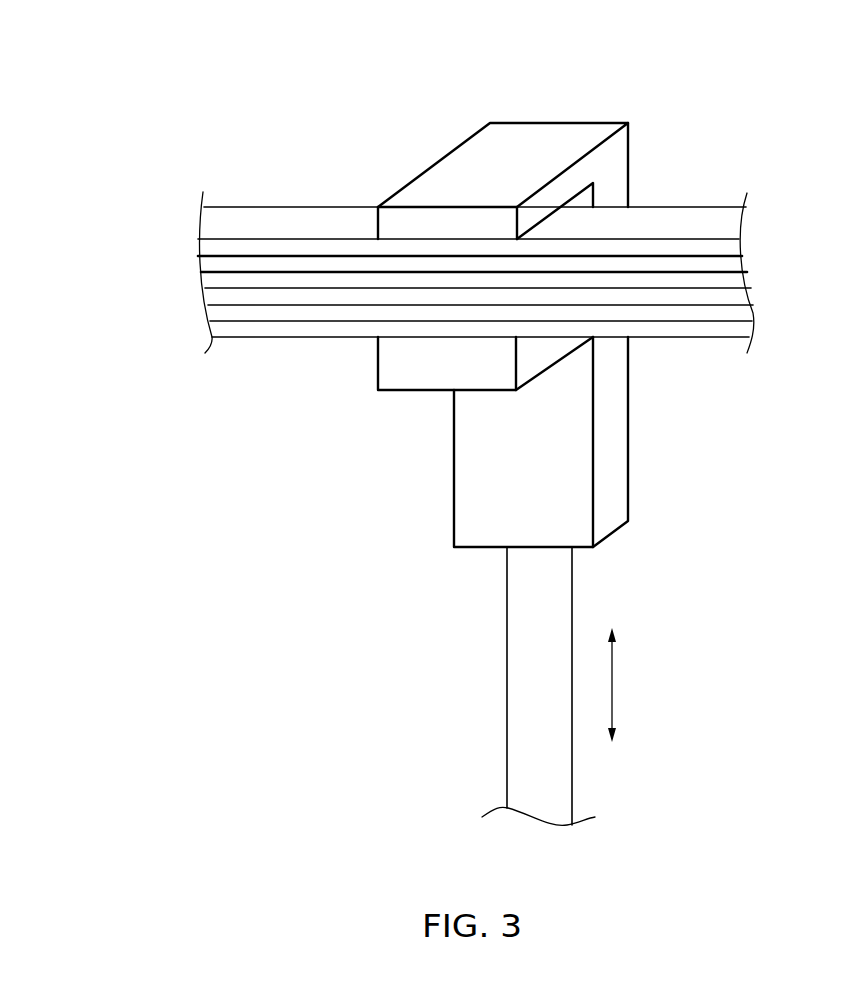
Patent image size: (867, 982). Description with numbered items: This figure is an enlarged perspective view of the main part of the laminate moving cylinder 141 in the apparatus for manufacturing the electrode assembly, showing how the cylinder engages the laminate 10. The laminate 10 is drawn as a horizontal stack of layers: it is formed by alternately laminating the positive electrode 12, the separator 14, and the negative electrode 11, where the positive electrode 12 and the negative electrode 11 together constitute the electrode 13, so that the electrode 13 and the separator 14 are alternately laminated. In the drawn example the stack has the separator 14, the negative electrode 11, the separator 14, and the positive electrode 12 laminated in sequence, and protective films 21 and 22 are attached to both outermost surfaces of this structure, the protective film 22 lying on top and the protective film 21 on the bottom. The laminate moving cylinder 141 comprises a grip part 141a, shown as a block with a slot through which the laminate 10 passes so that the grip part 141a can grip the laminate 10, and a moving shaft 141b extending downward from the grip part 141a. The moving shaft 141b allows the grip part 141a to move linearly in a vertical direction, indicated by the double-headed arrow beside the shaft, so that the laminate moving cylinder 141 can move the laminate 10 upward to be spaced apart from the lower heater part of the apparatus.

The laminate 10 is at (400, 296).
The negative electrode 11 is at (213, 298).
The positive electrode 12 is at (205, 263).
The electrode 13 is at (400, 315).
The separator 14 is at (238, 283).
The protective film 21 is at (285, 332).
The protective film 22 is at (293, 247).
The laminate moving cylinder 141 is at (575, 421).
The grip part 141a is at (532, 218).
The moving shaft 141b is at (553, 608).